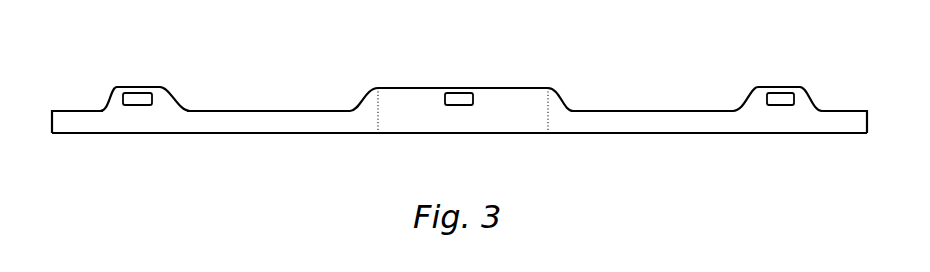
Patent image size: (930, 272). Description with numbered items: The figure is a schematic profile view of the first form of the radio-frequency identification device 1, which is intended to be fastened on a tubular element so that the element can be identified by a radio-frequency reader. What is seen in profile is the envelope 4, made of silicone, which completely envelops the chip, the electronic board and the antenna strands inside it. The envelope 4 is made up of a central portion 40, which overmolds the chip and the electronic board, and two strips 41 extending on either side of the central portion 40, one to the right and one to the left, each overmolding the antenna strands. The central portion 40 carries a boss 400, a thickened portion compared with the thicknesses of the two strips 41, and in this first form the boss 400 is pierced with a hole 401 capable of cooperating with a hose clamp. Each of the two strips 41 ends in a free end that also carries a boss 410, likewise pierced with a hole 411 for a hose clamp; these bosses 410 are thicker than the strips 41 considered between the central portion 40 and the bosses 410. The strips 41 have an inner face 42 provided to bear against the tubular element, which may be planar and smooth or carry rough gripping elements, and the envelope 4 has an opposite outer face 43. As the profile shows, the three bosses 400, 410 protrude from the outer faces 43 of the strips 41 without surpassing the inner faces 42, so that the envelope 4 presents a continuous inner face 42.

The radio-frequency identification device 1 is at (667, 203).
The envelope 4 is at (162, 143).
The central portion 40 is at (401, 125).
The boss 400 is at (510, 110).
The hole 401 is at (455, 93).
The strips 41 is at (224, 110).
The boss 410 is at (116, 101).
The hole 411 is at (138, 93).
The inner face 42 is at (295, 134).
The outer face 43 is at (288, 110).